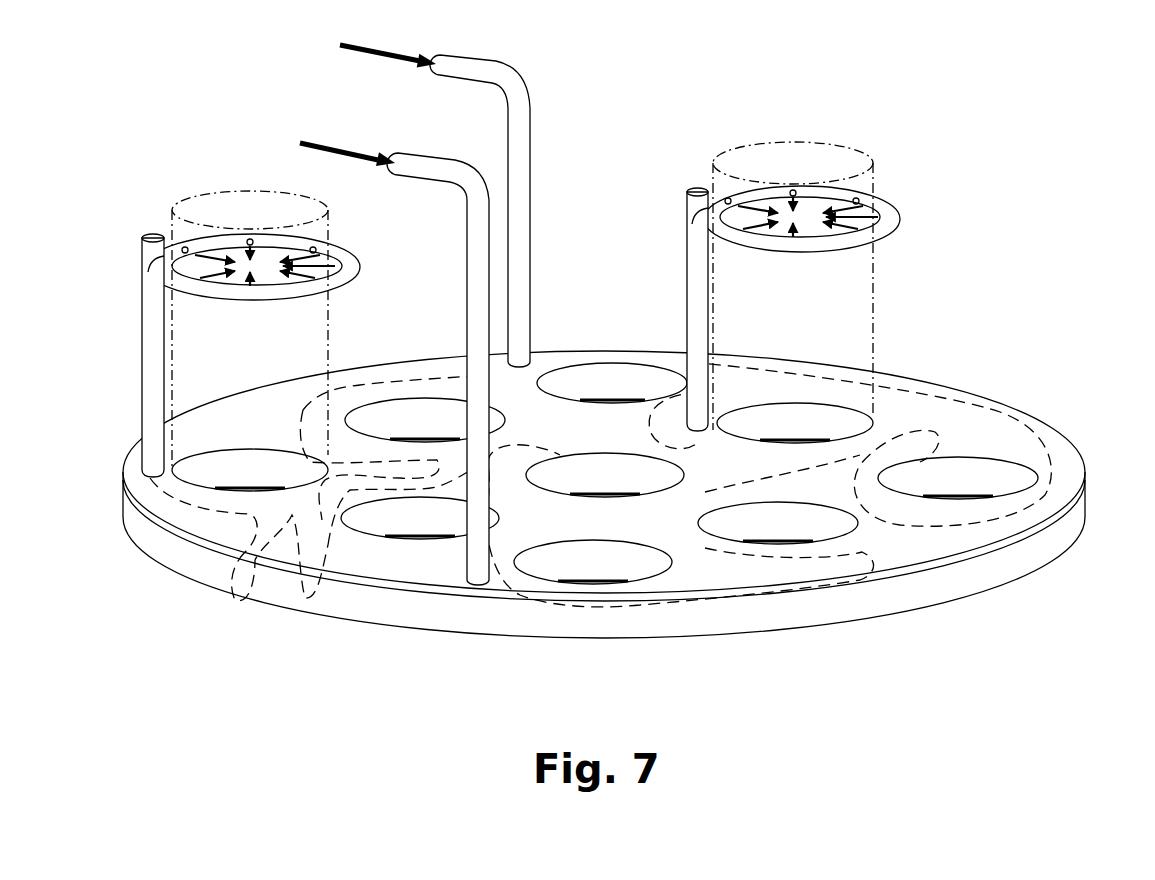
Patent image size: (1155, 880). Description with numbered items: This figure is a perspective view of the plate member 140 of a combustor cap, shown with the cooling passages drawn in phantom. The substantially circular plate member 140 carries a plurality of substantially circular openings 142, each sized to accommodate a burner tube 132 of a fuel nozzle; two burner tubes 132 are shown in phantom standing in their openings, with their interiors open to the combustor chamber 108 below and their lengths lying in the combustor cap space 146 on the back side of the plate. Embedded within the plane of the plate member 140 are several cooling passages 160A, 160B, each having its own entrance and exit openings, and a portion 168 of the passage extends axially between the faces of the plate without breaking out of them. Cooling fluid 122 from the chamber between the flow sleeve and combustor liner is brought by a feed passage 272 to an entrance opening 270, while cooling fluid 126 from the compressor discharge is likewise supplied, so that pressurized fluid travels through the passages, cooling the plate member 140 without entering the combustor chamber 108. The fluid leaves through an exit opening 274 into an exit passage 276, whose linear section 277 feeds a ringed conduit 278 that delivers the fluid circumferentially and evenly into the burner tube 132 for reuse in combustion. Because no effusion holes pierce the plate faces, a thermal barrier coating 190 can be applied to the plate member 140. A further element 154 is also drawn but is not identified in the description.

The combustor chamber 108 is at (549, 700).
The cooling fluid 122 is at (366, 45).
The cooling fluid 126 is at (348, 148).
The burner tube 132 is at (245, 205).
The plate member 140 is at (1072, 478).
The opening 142 is at (607, 390).
The combustor cap space 146 is at (441, 287).
The platter body 154 is at (453, 606).
The cooling passage 160A is at (870, 560).
The cooling passage 160B is at (258, 530).
The portion of cooling passage 168 is at (266, 555).
The thermal barrier coating 190 is at (1033, 535).
The entrance opening 270 is at (520, 368).
The feed passage 272 is at (518, 145).
The exit opening 274 is at (733, 443).
The exit passage 276 is at (684, 180).
The linear section 277 is at (697, 273).
The ringed conduit 278 is at (890, 230).